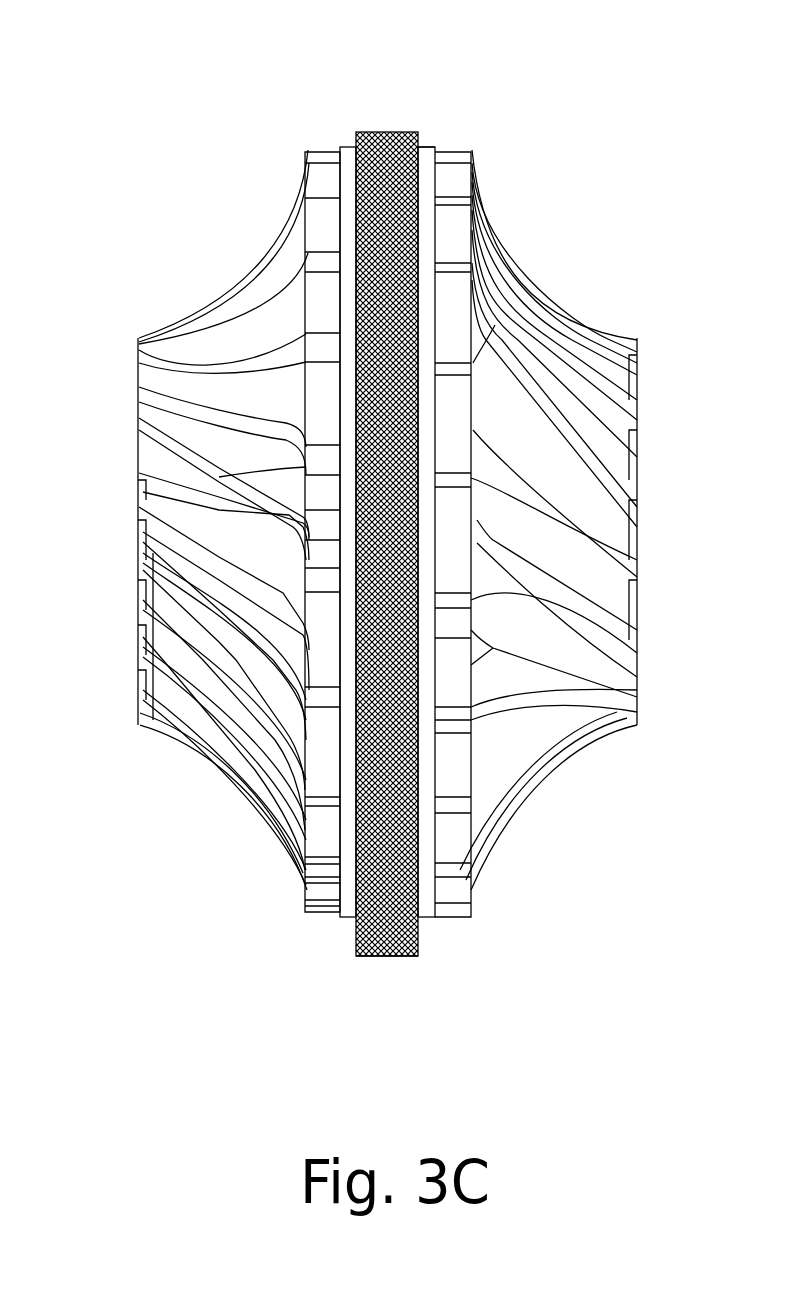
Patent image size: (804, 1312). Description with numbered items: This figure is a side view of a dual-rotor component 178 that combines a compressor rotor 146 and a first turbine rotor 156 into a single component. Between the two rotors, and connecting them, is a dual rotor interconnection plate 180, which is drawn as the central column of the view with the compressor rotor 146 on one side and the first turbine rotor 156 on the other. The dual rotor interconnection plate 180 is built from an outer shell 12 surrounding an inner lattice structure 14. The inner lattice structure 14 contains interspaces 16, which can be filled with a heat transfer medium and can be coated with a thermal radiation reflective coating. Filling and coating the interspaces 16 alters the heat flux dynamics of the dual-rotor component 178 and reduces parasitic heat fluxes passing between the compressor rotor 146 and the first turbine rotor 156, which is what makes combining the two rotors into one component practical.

The dual-rotor component 178 is at (146, 97).
The outer shell 12 is at (370, 133).
The inner lattice structure 14 is at (398, 133).
The interspaces 16 is at (427, 160).
The first turbine rotor 156 is at (208, 750).
The compressor rotor 146 is at (563, 753).
The dual rotor interconnection plate 180 is at (390, 957).